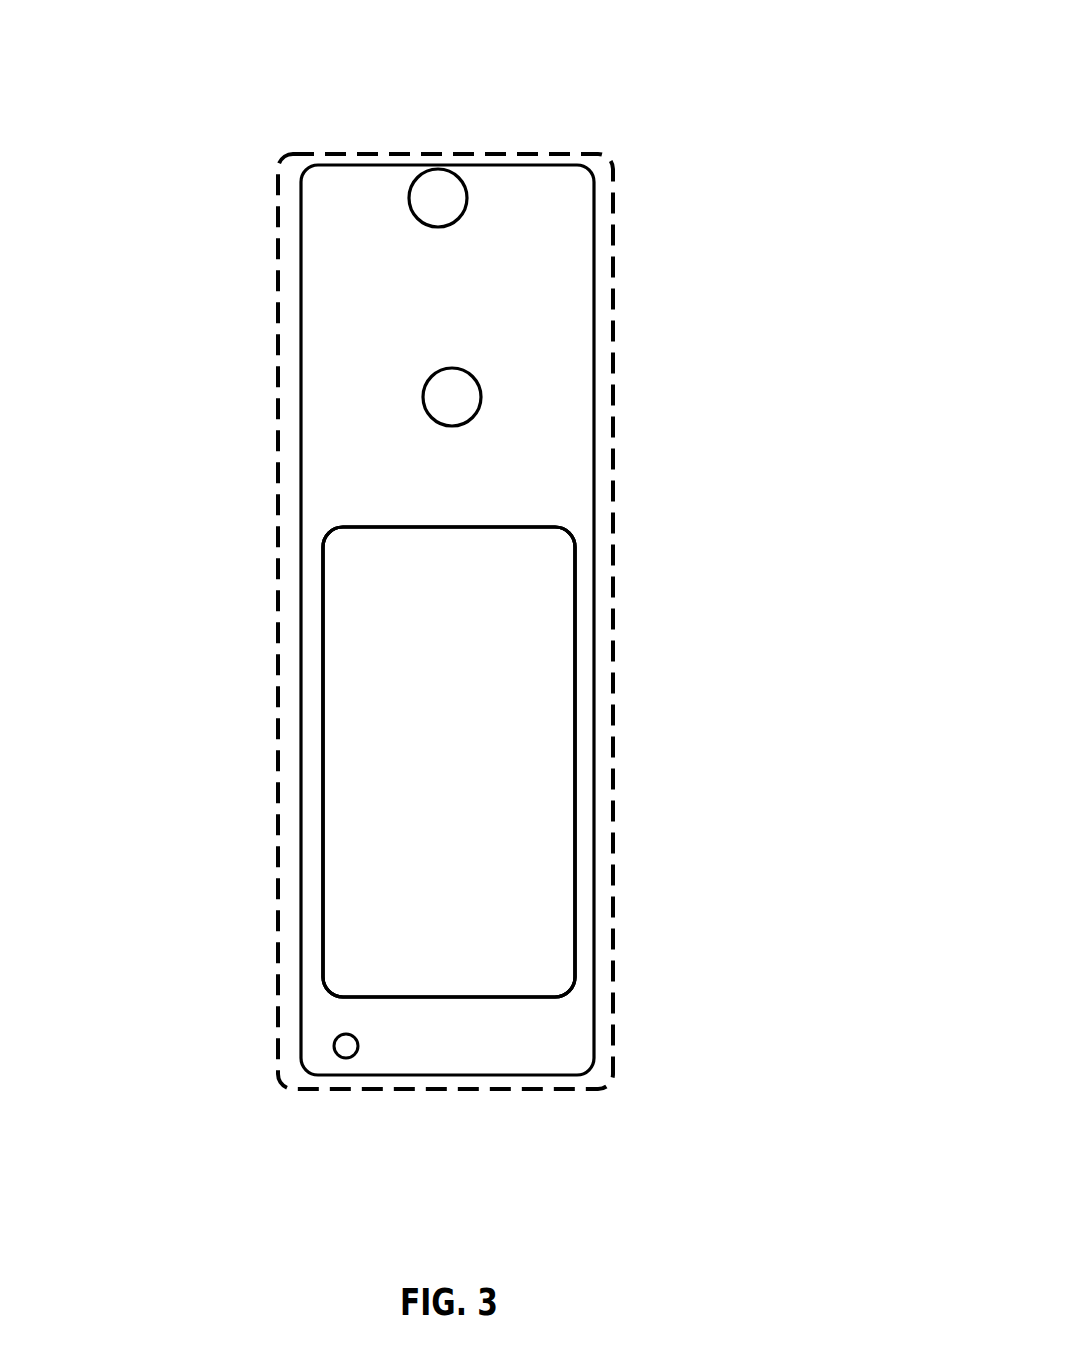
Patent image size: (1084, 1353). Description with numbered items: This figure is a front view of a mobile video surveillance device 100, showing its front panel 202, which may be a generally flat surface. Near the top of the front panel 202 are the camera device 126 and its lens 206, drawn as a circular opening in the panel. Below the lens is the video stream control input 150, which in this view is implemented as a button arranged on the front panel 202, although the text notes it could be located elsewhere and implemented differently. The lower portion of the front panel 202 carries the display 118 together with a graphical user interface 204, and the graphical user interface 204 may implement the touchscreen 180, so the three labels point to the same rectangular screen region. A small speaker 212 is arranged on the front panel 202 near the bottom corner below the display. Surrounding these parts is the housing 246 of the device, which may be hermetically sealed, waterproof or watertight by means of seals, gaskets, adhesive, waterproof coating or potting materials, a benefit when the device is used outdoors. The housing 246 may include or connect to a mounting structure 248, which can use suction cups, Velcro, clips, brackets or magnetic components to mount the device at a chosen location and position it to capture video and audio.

The mobile video surveillance device 100 is at (511, 113).
The camera device 126 is at (378, 141).
The front panel 202 is at (612, 970).
The lens 206 is at (438, 198).
The video stream control input 150 is at (452, 397).
The housing 246 is at (323, 480).
The mounting structure 248 is at (218, 570).
The display 118 is at (530, 738).
The graphical user interface 204 is at (529, 548).
The touchscreen 180 is at (535, 874).
The speaker 212 is at (364, 1088).